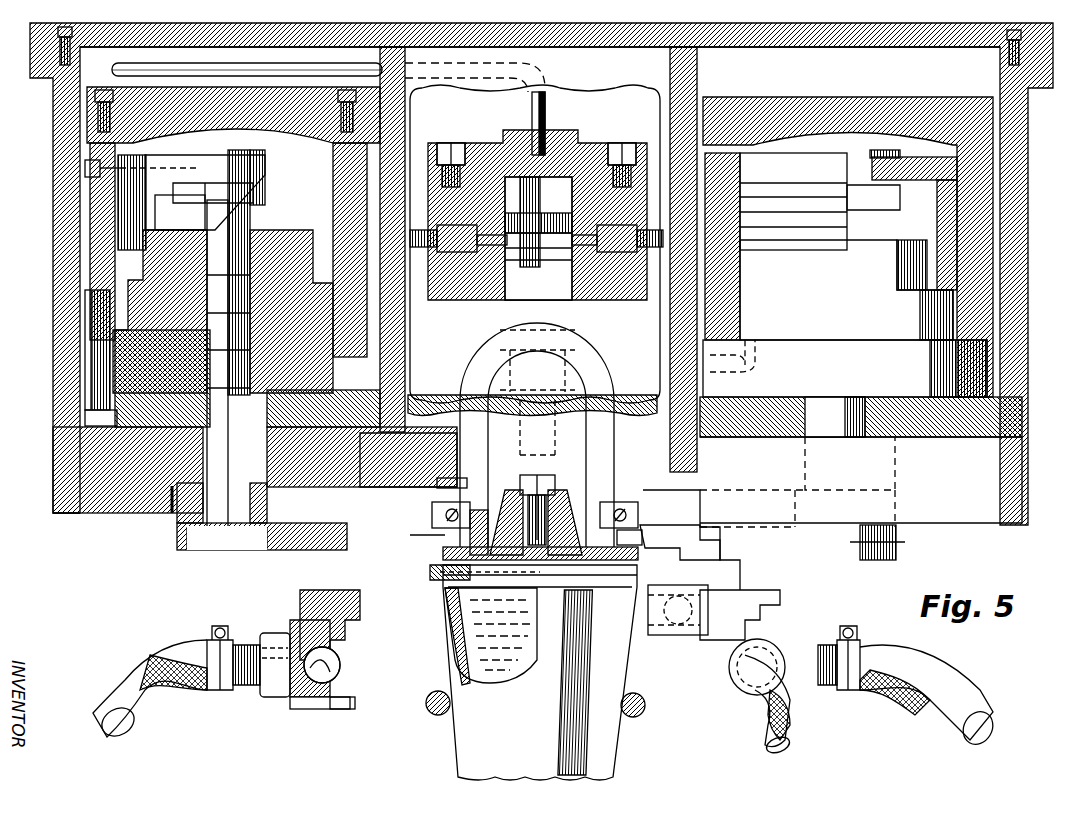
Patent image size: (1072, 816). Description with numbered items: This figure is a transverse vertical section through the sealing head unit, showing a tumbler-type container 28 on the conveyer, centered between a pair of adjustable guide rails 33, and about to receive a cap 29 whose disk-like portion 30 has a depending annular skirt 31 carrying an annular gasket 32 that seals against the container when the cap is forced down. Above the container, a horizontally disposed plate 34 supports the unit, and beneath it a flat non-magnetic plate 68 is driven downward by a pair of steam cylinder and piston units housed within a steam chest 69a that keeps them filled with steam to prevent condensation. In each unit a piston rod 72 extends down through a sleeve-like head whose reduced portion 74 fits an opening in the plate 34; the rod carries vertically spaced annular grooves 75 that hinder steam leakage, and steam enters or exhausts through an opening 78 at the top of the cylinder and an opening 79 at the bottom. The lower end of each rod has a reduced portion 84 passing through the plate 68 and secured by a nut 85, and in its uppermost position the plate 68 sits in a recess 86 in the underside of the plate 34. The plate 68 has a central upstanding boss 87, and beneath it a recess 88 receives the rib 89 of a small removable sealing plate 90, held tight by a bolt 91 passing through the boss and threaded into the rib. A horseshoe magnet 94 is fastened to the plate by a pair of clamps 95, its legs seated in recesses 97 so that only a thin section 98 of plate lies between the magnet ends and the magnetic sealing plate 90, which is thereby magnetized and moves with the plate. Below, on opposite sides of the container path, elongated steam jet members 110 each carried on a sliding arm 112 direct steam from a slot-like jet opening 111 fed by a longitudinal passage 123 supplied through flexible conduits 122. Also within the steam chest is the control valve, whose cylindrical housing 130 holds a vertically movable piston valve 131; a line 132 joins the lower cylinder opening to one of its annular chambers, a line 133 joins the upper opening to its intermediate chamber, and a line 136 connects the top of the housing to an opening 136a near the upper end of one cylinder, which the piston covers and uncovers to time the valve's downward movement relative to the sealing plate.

The container 28 is at (595, 747).
The cap 29 is at (640, 570).
The disk-like portion 30 is at (520, 595).
The annular skirt 31 is at (445, 540).
The annular gasket 32 is at (430, 573).
The guide rails 33 is at (635, 693).
The plate 34 is at (770, 400).
The plate 68 is at (283, 550).
The steam chest 69a is at (68, 116).
The piston rod 72 is at (207, 252).
The reduced portion 74 is at (253, 455).
The annular grooves 75 is at (252, 262).
The opening 78 is at (385, 143).
The opening 79 is at (390, 367).
The reduced portion 84 is at (257, 493).
The nut 85 is at (200, 550).
The recess 86 is at (172, 510).
The boss 87 is at (567, 510).
The recess 88 is at (613, 538).
The rib 89 is at (506, 516).
The sealing plate 90 is at (630, 525).
The bolt 91 is at (545, 480).
The horseshoe magnet 94 is at (470, 444).
The clamps 95 is at (450, 500).
The recesses 97 is at (440, 528).
The thin section 98 is at (475, 517).
The steam jet members 110 is at (300, 601).
The jet opening 111 is at (668, 585).
The arm 112 is at (325, 700).
The flexible conduit 122 is at (172, 665).
The longitudinal passage 123 is at (300, 700).
The cylindrical housing 130 is at (482, 180).
The piston valve 131 is at (527, 225).
The line 132 is at (536, 238).
The line 133 is at (425, 148).
The line 136 is at (545, 110).
The opening 136a is at (85, 163).